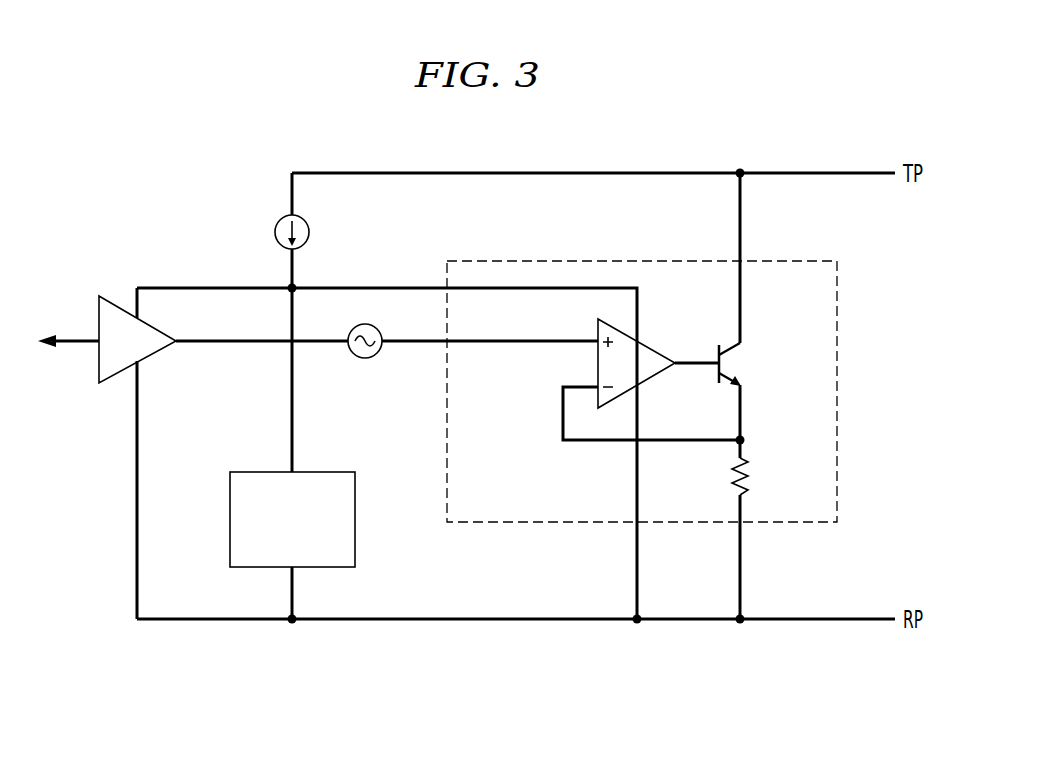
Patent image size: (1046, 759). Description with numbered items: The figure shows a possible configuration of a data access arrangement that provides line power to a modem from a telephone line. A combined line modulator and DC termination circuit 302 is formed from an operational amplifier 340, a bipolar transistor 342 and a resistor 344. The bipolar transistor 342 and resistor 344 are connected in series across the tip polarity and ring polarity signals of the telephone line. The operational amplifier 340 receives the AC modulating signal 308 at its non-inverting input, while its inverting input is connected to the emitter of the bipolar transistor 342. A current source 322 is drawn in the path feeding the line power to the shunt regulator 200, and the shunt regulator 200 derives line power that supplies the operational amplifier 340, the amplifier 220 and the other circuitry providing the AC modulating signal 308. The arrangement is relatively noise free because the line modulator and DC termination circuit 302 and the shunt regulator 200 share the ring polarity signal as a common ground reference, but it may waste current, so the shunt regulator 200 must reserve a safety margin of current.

The current source 322 is at (274, 232).
The amplifier 220 is at (98, 374).
The AC modulating signal 308 is at (365, 358).
The shunt regulator 200 is at (355, 518).
The combined line modulator and DC termination circuit 302 is at (837, 392).
The operational amplifier 340 is at (662, 352).
The bipolar transistor 342 is at (748, 362).
The resistor 344 is at (752, 480).